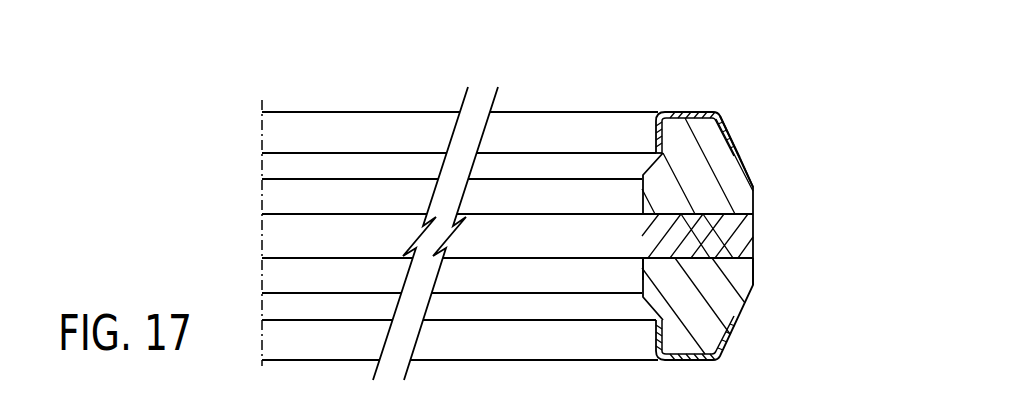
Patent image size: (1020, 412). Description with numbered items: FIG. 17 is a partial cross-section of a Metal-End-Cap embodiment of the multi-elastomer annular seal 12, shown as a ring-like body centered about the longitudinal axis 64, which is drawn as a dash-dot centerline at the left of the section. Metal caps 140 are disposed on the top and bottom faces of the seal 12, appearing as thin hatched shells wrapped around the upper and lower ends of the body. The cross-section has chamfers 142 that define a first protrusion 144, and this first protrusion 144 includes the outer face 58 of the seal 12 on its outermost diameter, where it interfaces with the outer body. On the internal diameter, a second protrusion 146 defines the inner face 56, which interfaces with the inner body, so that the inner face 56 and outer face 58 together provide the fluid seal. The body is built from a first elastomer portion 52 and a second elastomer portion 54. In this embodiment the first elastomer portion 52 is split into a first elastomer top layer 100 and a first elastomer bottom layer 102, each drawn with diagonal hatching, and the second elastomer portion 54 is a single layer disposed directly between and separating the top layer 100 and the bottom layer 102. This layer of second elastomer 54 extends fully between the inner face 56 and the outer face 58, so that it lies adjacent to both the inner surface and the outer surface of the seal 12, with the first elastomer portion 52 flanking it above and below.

The annular seal 12 is at (772, 71).
The longitudinal axis 64 is at (262, 103).
The metal caps 140 is at (717, 111).
The chamfers 142 is at (745, 157).
The first protrusion 144 is at (753, 178).
The second protrusion 146 is at (641, 173).
The first elastomer portion 52 is at (757, 236).
The first elastomer top layer 100 is at (750, 198).
The first elastomer bottom layer 102 is at (735, 306).
The second elastomer portion 54 is at (643, 235).
The inner face 56 is at (642, 271).
The outer face 58 is at (755, 274).